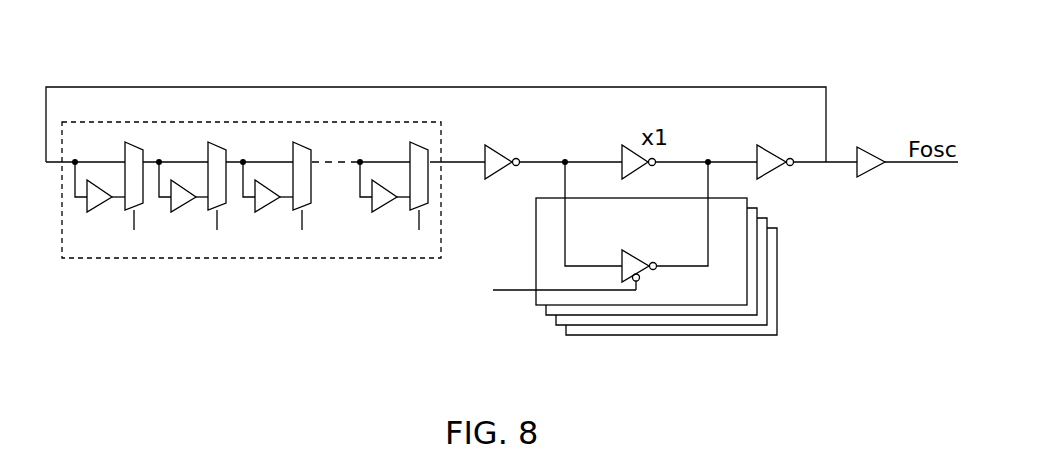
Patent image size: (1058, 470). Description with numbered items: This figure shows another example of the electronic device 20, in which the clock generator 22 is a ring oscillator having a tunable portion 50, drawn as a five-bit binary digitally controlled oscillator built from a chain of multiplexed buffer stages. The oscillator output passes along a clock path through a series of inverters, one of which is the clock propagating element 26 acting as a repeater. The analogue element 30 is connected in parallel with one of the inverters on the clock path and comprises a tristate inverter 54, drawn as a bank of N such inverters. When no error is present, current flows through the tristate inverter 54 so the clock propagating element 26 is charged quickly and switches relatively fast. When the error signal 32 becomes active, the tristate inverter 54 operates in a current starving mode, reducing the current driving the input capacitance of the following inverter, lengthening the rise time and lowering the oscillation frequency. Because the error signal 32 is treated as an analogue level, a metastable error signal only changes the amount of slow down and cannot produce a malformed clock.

The electronic device 20 is at (101, 76).
The clock generator 22 is at (524, 121).
The clock propagating element 26 is at (775, 151).
The analogue element 30 is at (627, 338).
The error signal 32 is at (515, 300).
The tunable portion 50 is at (122, 260).
The tristate inverter 54 is at (641, 249).